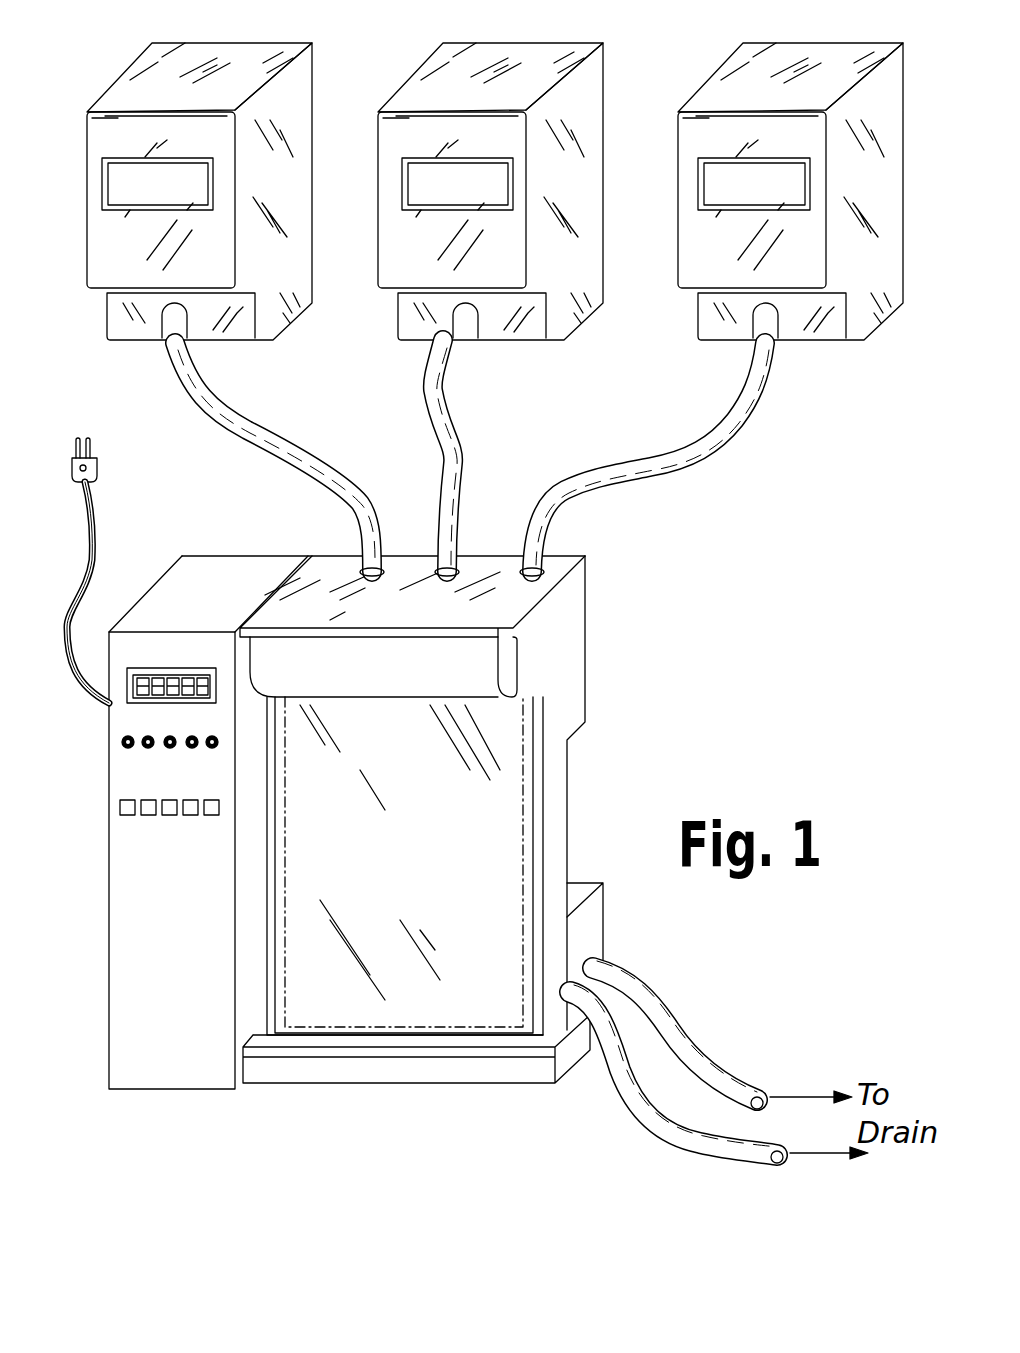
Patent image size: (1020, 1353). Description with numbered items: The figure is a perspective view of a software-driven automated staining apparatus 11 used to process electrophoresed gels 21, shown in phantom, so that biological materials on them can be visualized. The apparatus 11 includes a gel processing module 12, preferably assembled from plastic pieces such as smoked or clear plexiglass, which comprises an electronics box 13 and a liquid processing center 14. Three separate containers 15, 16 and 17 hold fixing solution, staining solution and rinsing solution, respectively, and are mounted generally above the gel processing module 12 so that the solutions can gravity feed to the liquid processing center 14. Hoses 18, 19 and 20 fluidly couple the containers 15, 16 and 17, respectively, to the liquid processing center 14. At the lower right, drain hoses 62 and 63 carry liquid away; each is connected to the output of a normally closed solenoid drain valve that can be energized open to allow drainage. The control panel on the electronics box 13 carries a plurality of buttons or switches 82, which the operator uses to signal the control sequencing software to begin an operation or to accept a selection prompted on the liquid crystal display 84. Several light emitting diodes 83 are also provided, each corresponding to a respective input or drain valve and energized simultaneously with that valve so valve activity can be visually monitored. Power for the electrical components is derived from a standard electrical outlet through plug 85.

The staining apparatus 11 is at (403, 833).
The gel processing module 12 is at (197, 556).
The electronics box 13 is at (179, 870).
The liquid processing center 14 is at (433, 857).
The container of fixing solution 15 is at (137, 340).
The container of staining solution 16 is at (527, 345).
The container of rinsing solution 17 is at (820, 345).
The hose 18 is at (242, 433).
The hose 19 is at (455, 440).
The hose 20 is at (730, 440).
The electrophoresed gel 21 is at (540, 750).
The drain hose 62 is at (657, 1130).
The drain hose 63 is at (690, 1058).
The buttons or switches 82 is at (148, 814).
The light emitting diodes 83 is at (148, 748).
The liquid crystal display 84 is at (137, 670).
The plug 85 is at (100, 467).